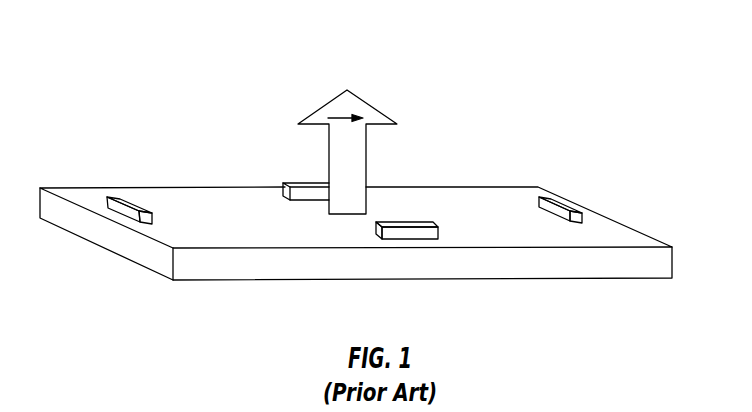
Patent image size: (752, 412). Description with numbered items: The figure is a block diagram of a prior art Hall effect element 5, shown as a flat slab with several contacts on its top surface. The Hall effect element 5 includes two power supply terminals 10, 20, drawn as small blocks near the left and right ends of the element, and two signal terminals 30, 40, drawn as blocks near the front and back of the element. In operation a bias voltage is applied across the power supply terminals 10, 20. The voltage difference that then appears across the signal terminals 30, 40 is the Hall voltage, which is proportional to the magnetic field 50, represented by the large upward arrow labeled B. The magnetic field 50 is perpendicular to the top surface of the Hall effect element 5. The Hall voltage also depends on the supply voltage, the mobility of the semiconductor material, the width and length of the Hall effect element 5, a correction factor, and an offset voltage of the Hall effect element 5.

The Hall effect element 5 is at (361, 233).
The power supply terminal 10 is at (146, 190).
The power supply terminal 20 is at (579, 192).
The signal terminal 30 is at (388, 265).
The signal terminal 40 is at (292, 168).
The magnetic field 50 is at (358, 152).